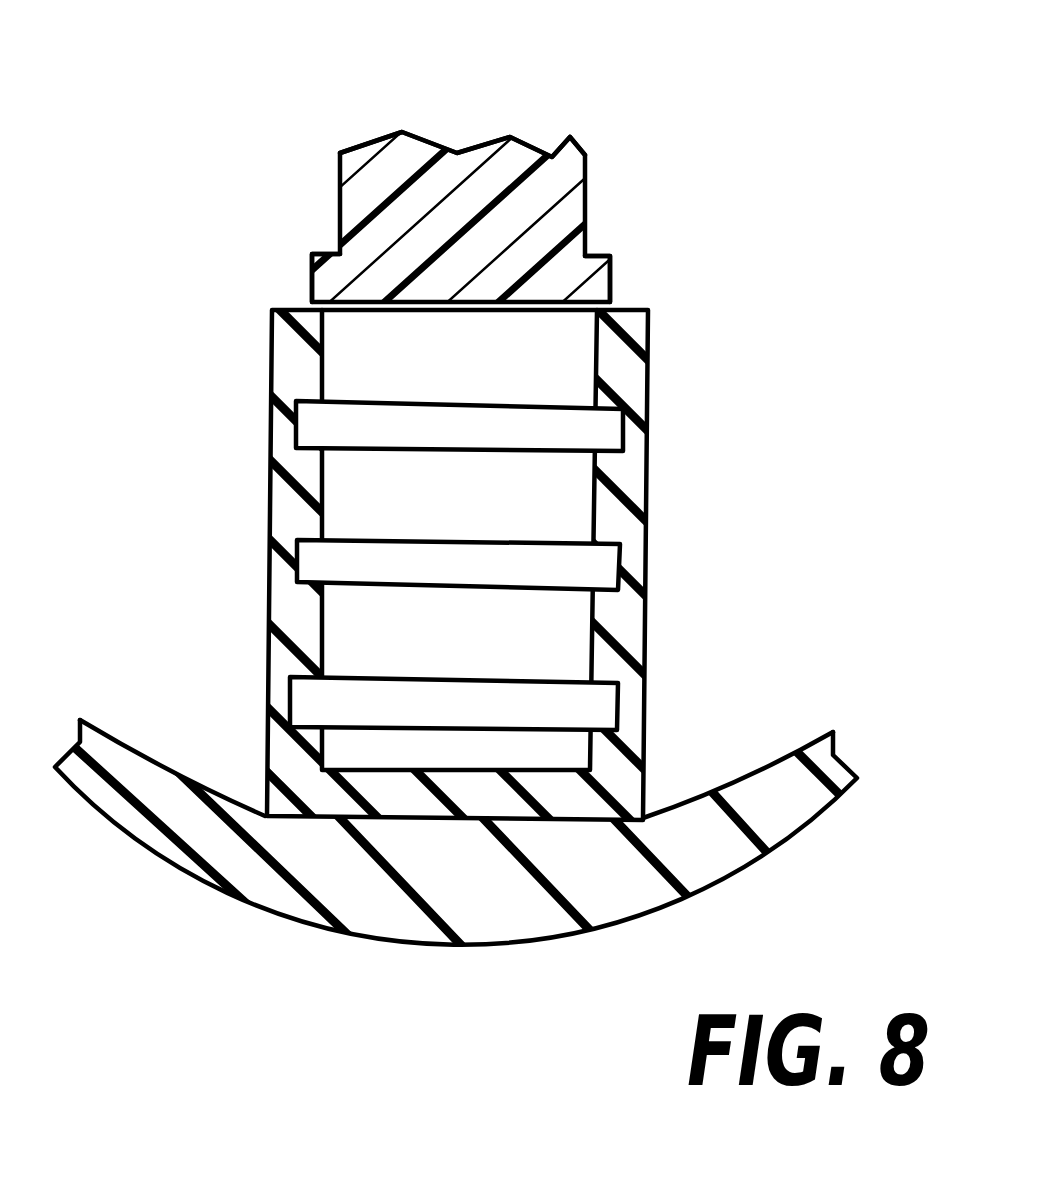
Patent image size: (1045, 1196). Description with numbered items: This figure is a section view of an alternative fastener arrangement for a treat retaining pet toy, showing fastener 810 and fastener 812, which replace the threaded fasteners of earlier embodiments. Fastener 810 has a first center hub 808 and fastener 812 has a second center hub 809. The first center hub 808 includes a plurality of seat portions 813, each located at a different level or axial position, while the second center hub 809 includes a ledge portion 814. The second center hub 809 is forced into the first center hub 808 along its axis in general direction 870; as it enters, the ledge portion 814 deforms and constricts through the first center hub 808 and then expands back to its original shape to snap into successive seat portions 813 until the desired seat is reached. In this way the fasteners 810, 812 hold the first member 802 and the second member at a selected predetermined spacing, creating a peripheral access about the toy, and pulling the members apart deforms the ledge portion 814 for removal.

The first member 802 is at (172, 883).
The first center hub 808 is at (273, 532).
The second center hub 809 is at (583, 193).
The fastener 810 is at (672, 542).
The fastener 812 is at (322, 180).
The seat portions 813 is at (270, 423).
The ledge portion 814 is at (323, 257).
The general direction 870 is at (460, 0).